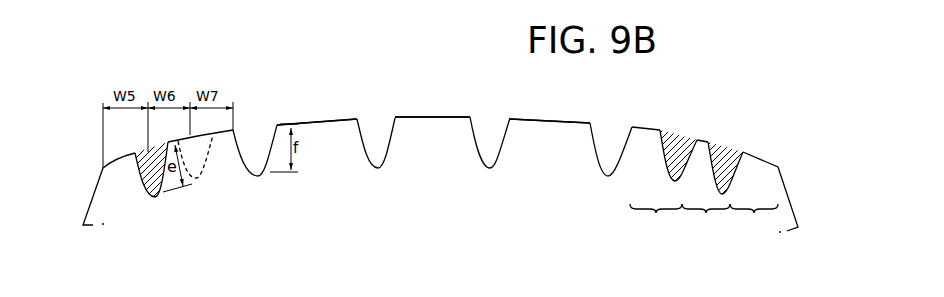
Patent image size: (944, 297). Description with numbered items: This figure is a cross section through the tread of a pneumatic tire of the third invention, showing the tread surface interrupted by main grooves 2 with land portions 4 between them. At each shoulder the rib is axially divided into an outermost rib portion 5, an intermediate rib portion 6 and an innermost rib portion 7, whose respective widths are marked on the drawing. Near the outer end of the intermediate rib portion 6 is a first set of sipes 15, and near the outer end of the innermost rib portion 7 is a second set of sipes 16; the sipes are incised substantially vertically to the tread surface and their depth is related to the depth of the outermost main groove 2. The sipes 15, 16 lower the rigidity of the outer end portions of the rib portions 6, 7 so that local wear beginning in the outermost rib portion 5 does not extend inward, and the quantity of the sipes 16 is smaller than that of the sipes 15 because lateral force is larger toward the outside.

The main groove 2 is at (262, 170).
The land portion 4 is at (325, 122).
The outermost rib portion 5 is at (754, 219).
The intermediate rib portion 6 is at (706, 219).
The innermost rib portion 7 is at (656, 219).
The first set of sipes 15 is at (143, 152).
The second set of sipes 16 is at (673, 133).